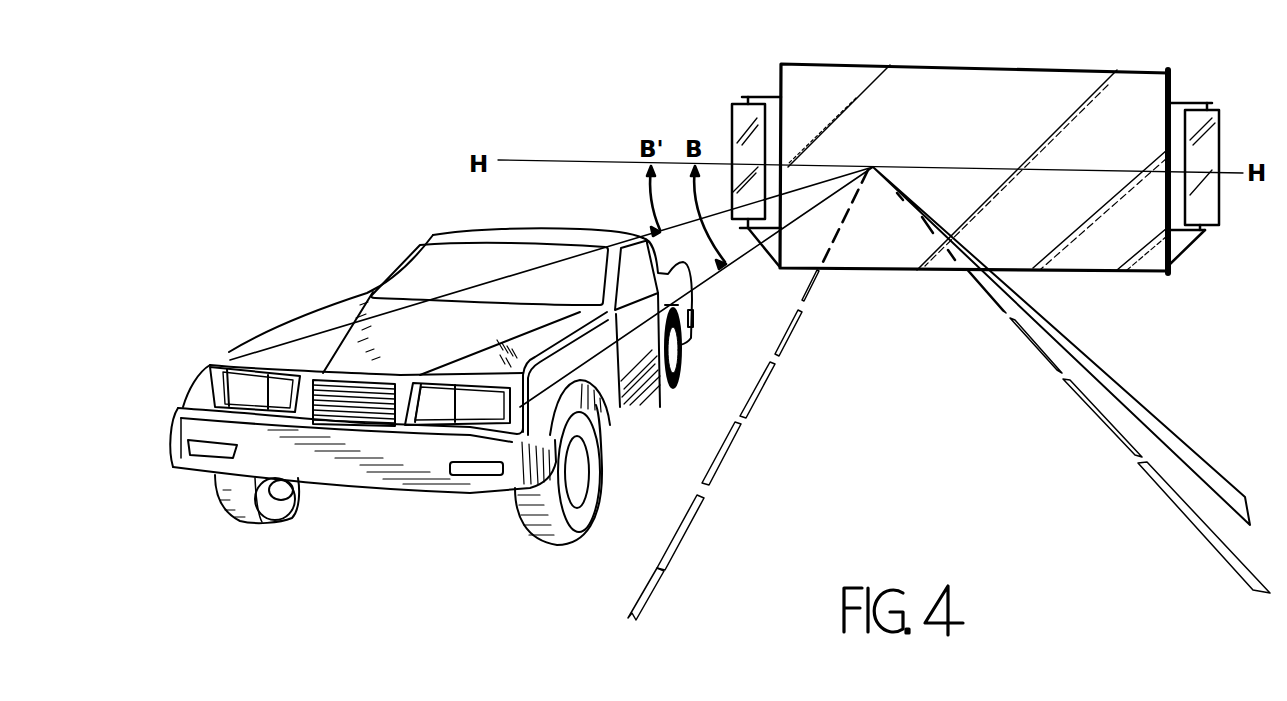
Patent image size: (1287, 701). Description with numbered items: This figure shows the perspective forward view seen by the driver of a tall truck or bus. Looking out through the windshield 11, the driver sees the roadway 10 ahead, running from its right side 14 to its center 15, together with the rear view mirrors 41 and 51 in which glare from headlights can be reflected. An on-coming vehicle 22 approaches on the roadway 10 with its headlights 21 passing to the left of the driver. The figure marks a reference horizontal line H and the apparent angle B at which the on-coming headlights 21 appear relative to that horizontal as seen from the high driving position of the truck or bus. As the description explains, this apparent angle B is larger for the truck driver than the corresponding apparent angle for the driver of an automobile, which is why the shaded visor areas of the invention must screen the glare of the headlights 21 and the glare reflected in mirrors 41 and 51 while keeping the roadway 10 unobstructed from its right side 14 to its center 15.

The roadway 10 is at (890, 252).
The windshield 11 is at (1156, 85).
The right side of roadway 14 is at (948, 250).
The center of roadway 15 is at (828, 252).
The on-coming headlights 21 is at (237, 383).
The vehicle 22 is at (435, 237).
The rear view mirror 41 is at (732, 117).
The rear view mirror 51 is at (1213, 222).